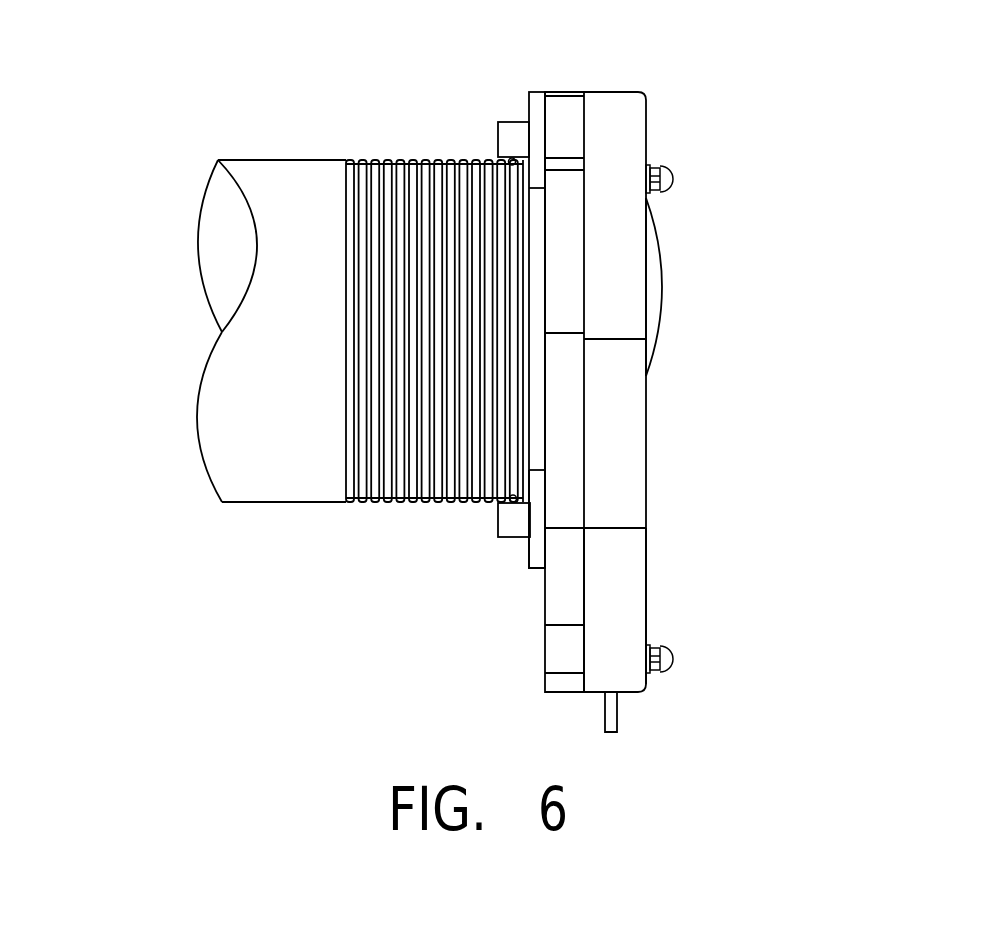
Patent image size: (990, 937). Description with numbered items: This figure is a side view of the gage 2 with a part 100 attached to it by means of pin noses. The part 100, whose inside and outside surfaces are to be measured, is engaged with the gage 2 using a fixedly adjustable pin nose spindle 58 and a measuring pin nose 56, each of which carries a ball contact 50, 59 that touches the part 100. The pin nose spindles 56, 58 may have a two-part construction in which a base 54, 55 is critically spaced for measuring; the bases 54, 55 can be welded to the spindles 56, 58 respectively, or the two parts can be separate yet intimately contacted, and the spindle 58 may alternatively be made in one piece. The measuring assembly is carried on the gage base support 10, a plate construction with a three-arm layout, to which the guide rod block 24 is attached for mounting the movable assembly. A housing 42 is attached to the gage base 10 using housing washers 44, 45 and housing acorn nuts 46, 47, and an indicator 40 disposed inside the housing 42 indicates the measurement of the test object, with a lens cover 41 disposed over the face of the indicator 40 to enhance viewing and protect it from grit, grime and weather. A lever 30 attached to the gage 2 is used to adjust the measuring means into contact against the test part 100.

The gage 2 is at (737, 487).
The gage base support 10 is at (563, 602).
The guide rod block 24 is at (547, 678).
The lever 30 is at (617, 733).
The indicator 40 is at (651, 297).
The lens cover 41 is at (663, 280).
The housing 42 is at (632, 588).
The housing washer 44 is at (651, 679).
The housing washer 45 is at (645, 157).
The housing acorn nut 46 is at (675, 660).
The housing acorn nut 47 is at (673, 173).
The ball contact 50 is at (498, 505).
The base 54 is at (537, 116).
The base 55 is at (530, 558).
The measuring pin nose 56 is at (498, 537).
The fixedly adjustable pin nose spindle 58 is at (498, 141).
The ball contact 59 is at (508, 161).
The part 100 is at (262, 502).